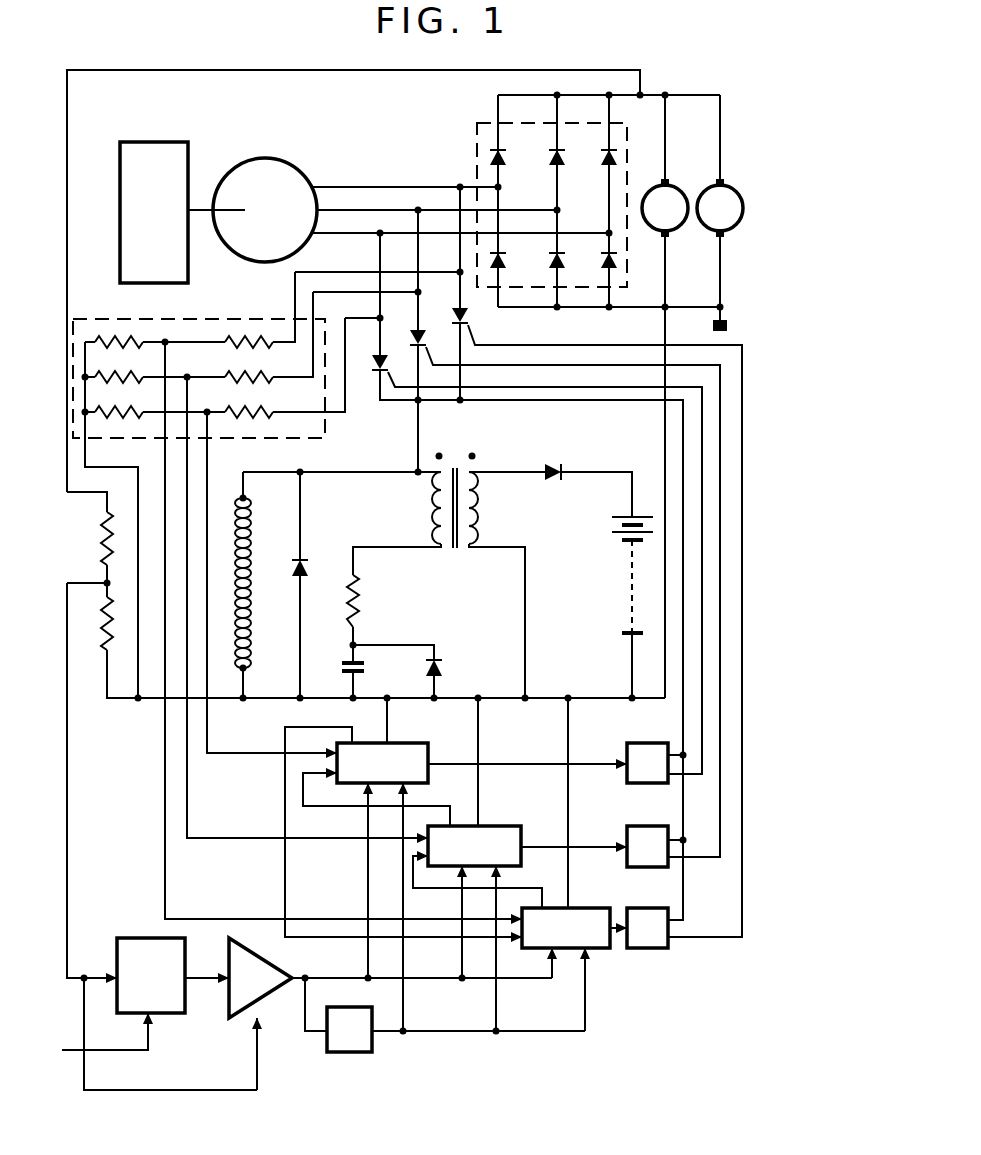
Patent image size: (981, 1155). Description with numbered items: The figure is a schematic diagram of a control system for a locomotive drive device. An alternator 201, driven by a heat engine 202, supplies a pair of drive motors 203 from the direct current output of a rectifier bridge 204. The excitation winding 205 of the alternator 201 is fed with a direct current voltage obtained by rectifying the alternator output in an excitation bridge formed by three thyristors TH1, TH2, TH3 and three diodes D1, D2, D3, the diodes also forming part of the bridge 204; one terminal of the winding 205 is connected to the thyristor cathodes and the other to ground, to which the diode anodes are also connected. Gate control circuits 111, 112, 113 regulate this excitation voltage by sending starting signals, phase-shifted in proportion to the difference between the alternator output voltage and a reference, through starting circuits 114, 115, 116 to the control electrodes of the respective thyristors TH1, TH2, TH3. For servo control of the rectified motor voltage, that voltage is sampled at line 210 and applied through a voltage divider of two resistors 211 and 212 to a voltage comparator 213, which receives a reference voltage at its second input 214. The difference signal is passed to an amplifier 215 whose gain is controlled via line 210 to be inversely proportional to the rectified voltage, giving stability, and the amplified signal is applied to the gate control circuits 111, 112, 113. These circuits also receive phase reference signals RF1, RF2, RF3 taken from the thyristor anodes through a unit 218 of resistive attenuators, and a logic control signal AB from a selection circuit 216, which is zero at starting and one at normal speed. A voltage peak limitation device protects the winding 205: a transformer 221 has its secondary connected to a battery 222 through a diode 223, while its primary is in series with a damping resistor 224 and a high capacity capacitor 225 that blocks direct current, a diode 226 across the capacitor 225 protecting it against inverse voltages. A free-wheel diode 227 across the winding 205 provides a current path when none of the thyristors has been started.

The line 210 is at (200, 70).
The alternator 201 is at (283, 183).
The heat engine 202 is at (177, 158).
The drive motors 203 is at (708, 210).
The rectifier bridge 204 is at (534, 201).
The excitation winding 205 is at (254, 655).
The resistor 211 is at (117, 513).
The resistor 212 is at (108, 652).
The voltage comparator 213 is at (147, 955).
The second input 214 is at (128, 1052).
The amplifier 215 is at (243, 997).
The selection circuit 216 is at (337, 1040).
The unit of resistive attenuators 218 is at (197, 328).
The transformer 221 is at (452, 458).
The battery 222 is at (630, 587).
The diode 223 is at (548, 466).
The resistor 224 is at (363, 595).
The high capacity capacitor 225 is at (366, 672).
The diode 226 is at (443, 668).
The free-wheel diode 227 is at (304, 558).
The gate control circuit 111 is at (410, 758).
The gate control circuit 112 is at (495, 838).
The gate control circuit 113 is at (615, 878).
The starting circuit 114 is at (632, 755).
The starting circuit 115 is at (632, 838).
The starting circuit 116 is at (652, 948).
The thyristor TH1 is at (374, 372).
The thyristor TH2 is at (414, 346).
The thyristor TH3 is at (468, 322).
The diode D1 is at (648, 262).
The diode D2 is at (590, 262).
The diode D3 is at (532, 262).
The phase reference signal RF1 is at (252, 752).
The phase reference signal RF2 is at (249, 837).
The phase reference signal RF3 is at (244, 918).
The logic control signal AB is at (457, 1033).